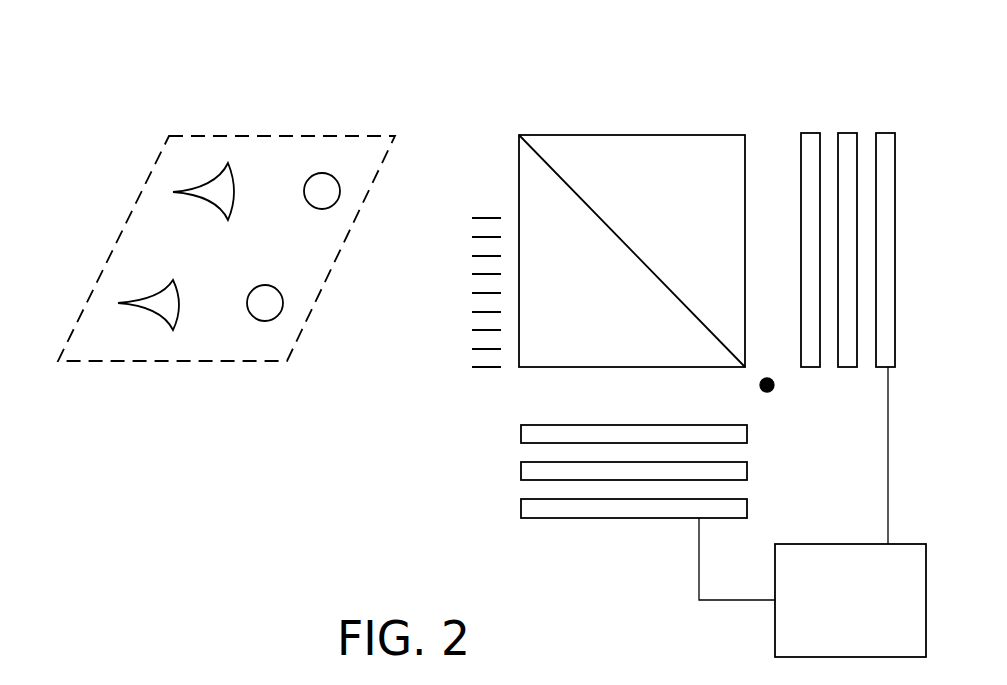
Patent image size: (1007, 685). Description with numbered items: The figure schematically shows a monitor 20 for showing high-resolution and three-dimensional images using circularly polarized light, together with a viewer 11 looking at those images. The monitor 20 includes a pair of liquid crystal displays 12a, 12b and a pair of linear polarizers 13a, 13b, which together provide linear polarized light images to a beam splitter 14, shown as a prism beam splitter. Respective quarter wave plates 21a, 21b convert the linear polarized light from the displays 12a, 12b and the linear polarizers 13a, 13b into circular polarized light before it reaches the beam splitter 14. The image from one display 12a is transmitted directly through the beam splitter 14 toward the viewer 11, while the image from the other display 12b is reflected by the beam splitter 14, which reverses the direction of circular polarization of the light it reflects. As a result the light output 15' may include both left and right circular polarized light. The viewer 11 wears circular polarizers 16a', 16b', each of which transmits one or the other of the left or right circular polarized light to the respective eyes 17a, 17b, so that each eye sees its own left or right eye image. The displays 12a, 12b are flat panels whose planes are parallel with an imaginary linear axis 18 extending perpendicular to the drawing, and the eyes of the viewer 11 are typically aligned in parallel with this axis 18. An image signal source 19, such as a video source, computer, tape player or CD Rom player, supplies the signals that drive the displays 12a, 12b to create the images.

The viewer 11 is at (405, 89).
The liquid crystal display 12a is at (886, 133).
The liquid crystal display 12b is at (747, 504).
The linear polarizer 13a is at (847, 133).
The linear polarizer 13b is at (747, 471).
The beam splitter 14 is at (668, 290).
The light output 15' is at (501, 220).
The circular polarizer 16a' is at (340, 138).
The circular polarizer 16b' is at (286, 361).
The eye 17a is at (238, 193).
The eye 17b is at (158, 317).
The imaginary linear axis 18 is at (773, 393).
The image signal source 19 is at (775, 636).
The monitor 20 is at (725, 113).
The quarter wave plate 21a is at (808, 133).
The quarter wave plate 21b is at (521, 432).